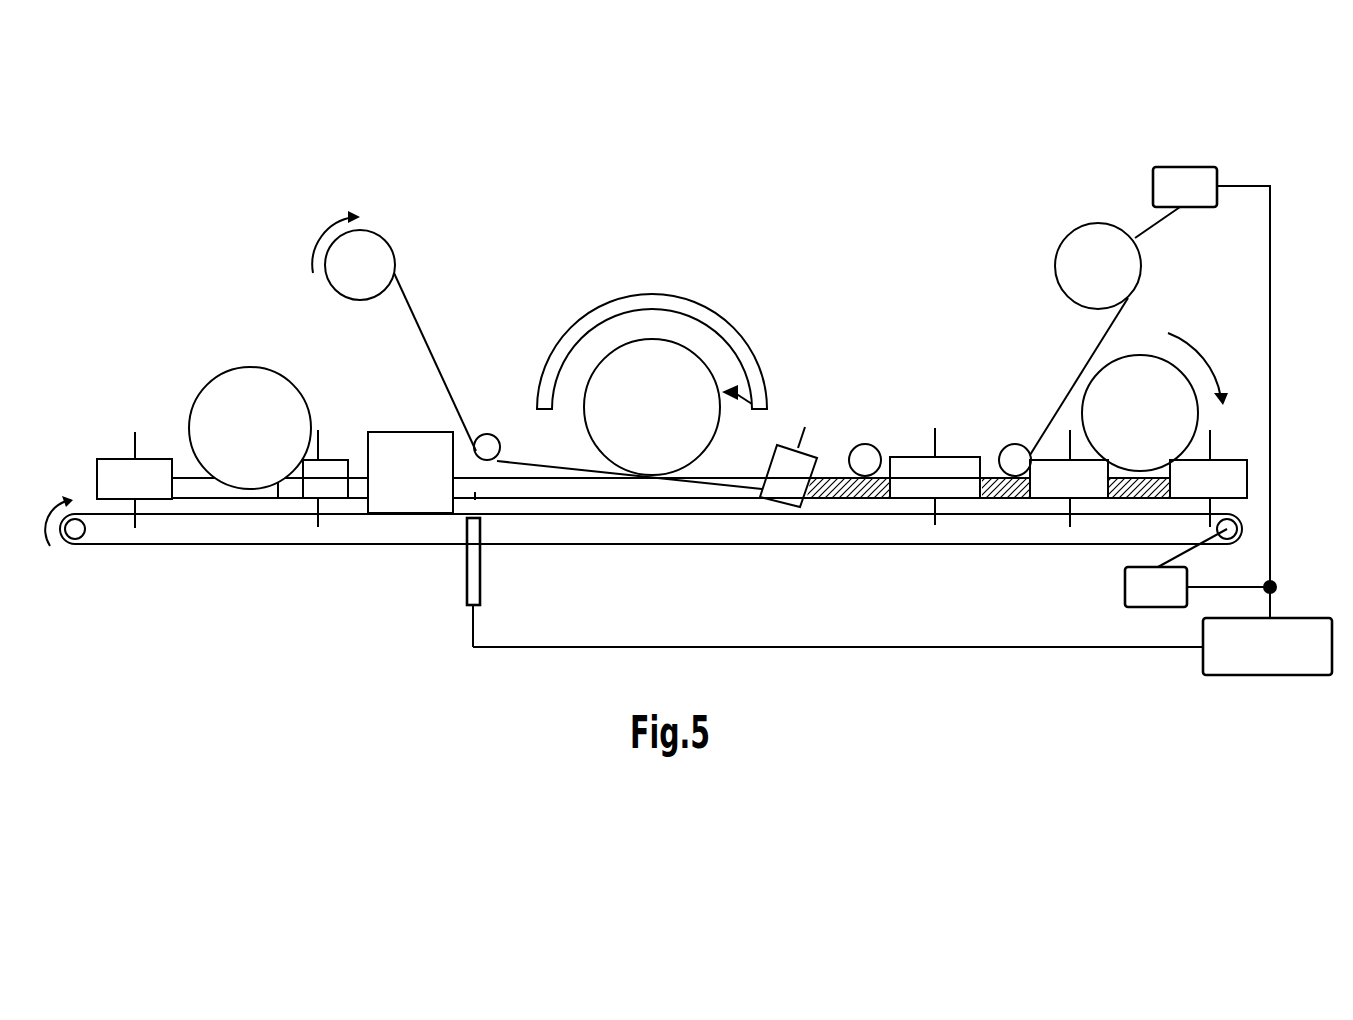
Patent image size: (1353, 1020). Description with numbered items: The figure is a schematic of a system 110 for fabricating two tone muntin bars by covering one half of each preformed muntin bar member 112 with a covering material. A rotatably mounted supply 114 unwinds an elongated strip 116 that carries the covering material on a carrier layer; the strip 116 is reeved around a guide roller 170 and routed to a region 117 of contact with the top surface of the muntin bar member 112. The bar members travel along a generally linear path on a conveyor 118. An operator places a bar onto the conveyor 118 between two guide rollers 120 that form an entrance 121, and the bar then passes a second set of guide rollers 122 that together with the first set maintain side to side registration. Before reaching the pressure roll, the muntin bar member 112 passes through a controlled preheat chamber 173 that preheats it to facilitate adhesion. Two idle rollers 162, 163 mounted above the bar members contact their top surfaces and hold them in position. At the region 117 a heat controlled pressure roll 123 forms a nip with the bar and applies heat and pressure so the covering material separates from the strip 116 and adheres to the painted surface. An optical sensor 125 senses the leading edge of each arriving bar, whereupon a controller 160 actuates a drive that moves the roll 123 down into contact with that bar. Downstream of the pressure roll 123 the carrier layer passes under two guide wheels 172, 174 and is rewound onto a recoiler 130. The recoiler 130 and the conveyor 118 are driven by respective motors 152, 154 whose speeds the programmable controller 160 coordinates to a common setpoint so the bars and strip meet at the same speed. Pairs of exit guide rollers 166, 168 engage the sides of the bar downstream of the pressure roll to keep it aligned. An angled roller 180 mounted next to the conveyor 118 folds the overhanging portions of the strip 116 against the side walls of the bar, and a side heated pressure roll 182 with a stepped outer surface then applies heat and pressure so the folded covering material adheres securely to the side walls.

The system 110 is at (712, 226).
The muntin bar member 112 is at (197, 492).
The supply 114 is at (370, 250).
The elongated strip 116 is at (428, 342).
The region of contact 117 is at (650, 477).
The conveyor 118 is at (383, 545).
The guide rollers 120 is at (153, 490).
The entrance 121 is at (97, 432).
The second set of guide rollers 122 is at (332, 472).
The pressure roll 123 is at (683, 372).
The sensor 125 is at (475, 585).
The recoiler 130 is at (1078, 252).
The motor 152 is at (1178, 183).
The motor 154 is at (1137, 588).
The controller 160 is at (1215, 667).
The idle roller 162 is at (245, 398).
The idle roller 163 is at (1160, 378).
The exit guide rollers 166 is at (1057, 490).
The exit guide rollers 168 is at (1247, 467).
The guide roller 170 is at (492, 458).
The guide wheel 172 is at (863, 457).
The preheat chamber 173 is at (405, 452).
The guide wheel 174 is at (1012, 457).
The angled roller 180 is at (787, 492).
The side heated pressure roll 182 is at (955, 490).